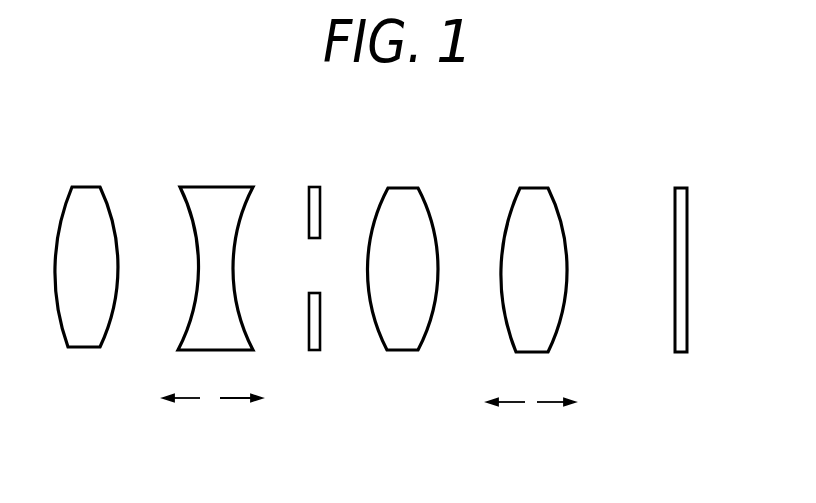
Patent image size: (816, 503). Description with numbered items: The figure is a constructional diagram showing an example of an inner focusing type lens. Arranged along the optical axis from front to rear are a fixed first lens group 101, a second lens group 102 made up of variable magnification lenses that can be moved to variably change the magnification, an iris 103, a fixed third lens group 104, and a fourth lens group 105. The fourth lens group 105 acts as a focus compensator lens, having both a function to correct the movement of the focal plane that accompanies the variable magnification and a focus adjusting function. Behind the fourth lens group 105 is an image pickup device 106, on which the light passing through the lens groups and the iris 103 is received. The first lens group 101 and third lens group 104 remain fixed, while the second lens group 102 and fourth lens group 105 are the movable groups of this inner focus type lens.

The fixed first lens group 101 is at (95, 185).
The second lens group 102 is at (237, 185).
The iris 103 is at (322, 185).
The fixed third lens group 104 is at (417, 185).
The fourth lens group 105 is at (545, 185).
The image pickup device 106 is at (685, 185).